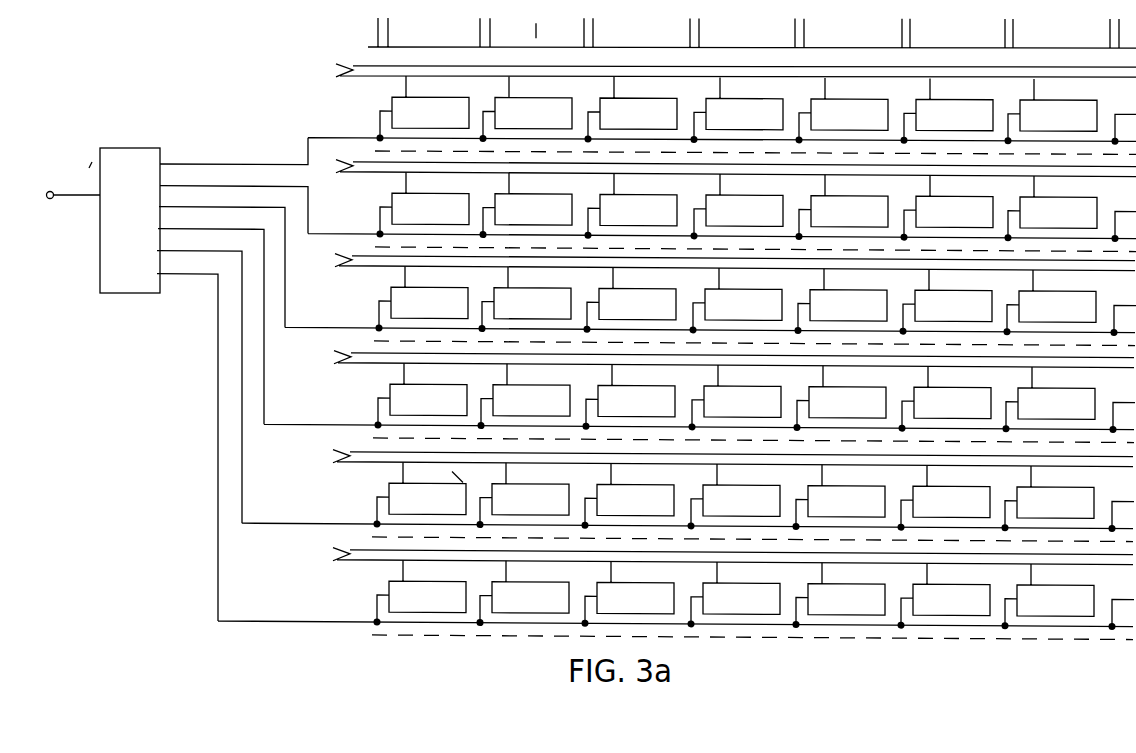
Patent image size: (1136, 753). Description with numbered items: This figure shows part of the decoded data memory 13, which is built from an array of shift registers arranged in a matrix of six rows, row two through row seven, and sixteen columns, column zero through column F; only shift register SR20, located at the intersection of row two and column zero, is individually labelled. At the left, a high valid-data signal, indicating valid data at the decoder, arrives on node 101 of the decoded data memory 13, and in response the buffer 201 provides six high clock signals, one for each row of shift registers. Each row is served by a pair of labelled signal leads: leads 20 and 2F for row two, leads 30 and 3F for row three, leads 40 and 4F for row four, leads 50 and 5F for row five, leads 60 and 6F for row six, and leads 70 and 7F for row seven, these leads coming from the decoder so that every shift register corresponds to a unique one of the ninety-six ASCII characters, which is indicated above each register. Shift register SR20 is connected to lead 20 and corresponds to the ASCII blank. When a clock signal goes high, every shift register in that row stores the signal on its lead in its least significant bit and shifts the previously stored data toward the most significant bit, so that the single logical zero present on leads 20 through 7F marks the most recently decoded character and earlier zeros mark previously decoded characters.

The decoded data memory 13 is at (609, 329).
The node 101 is at (49, 199).
The buffer 201 is at (130, 294).
The shift register SR20 is at (400, 97).
The lead 20 is at (721, 58).
The lead 2F is at (721, 76).
The lead 30 is at (721, 151).
The lead 3F is at (721, 171).
The lead 40 is at (720, 245).
The lead 4F is at (720, 265).
The lead 50 is at (719, 342).
The lead 5F is at (719, 362).
The lead 60 is at (718, 441).
The lead 6F is at (718, 461).
The lead 70 is at (718, 539).
The lead 7F is at (718, 559).